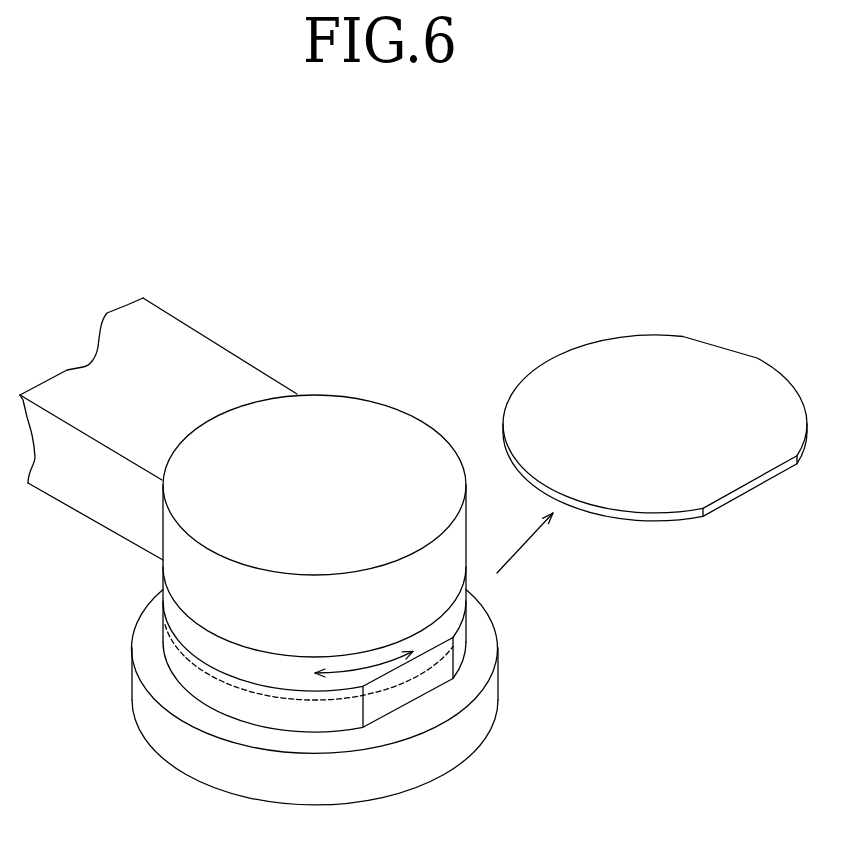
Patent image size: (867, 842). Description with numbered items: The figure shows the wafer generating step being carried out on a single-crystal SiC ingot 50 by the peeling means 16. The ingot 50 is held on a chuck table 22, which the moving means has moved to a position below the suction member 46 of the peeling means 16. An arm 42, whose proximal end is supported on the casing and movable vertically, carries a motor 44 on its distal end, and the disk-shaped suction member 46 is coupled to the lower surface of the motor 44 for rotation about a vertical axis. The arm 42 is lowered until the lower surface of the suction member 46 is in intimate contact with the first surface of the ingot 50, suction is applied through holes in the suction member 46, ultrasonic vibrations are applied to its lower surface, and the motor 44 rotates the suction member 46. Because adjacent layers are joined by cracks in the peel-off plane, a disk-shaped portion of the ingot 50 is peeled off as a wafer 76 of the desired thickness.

The peeling means 16 is at (358, 508).
The chuck table 22 is at (192, 757).
The arm 42 is at (188, 342).
The motor 44 is at (373, 418).
The suction member 46 is at (457, 612).
The ingot 50 is at (460, 653).
The wafer 76 is at (572, 362).